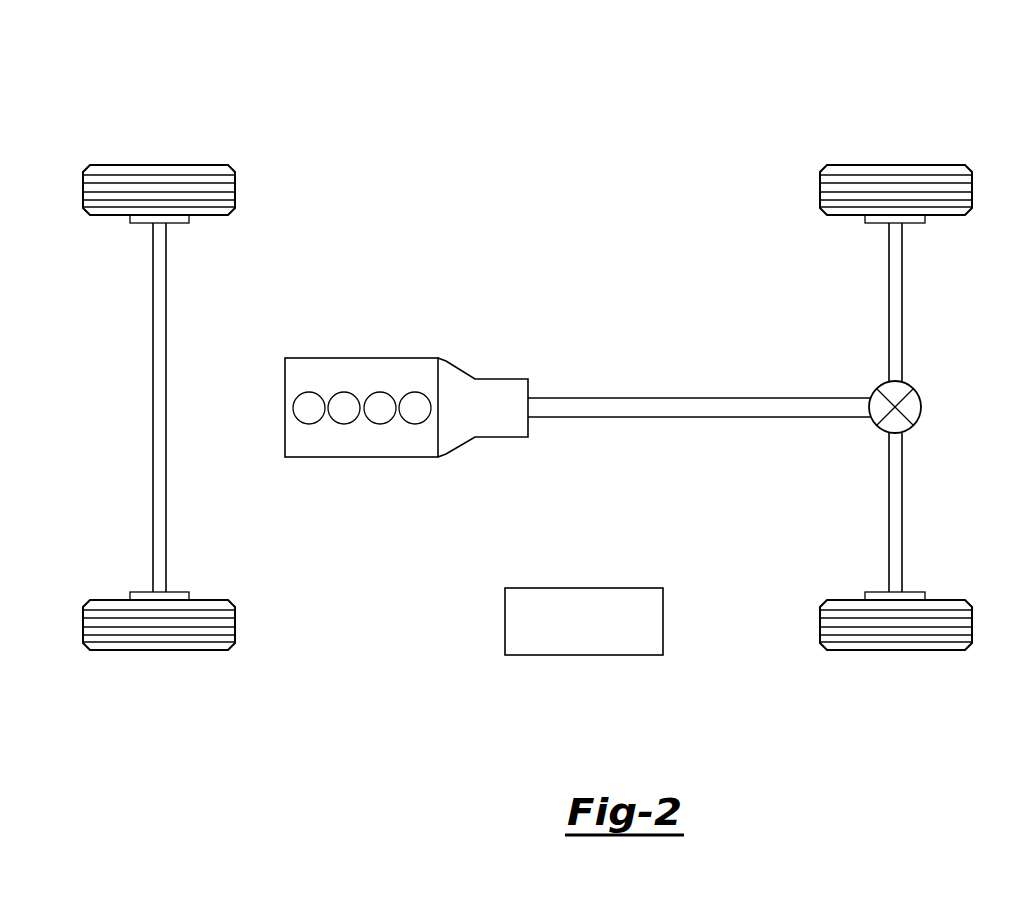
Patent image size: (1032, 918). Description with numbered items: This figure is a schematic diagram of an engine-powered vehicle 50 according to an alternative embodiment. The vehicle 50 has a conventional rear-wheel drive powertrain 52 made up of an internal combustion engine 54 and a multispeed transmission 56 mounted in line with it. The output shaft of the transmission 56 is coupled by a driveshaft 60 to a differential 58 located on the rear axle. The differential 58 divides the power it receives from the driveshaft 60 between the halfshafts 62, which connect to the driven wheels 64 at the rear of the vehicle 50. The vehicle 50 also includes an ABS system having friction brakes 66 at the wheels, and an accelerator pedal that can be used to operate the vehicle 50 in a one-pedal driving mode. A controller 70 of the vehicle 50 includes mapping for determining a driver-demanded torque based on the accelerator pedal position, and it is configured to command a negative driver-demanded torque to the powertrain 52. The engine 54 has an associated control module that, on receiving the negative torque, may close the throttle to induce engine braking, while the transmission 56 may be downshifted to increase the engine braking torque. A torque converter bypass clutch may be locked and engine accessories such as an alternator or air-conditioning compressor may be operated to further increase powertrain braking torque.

The vehicle 50 is at (935, 55).
The rear-wheel drive powertrain 52 is at (568, 320).
The internal combustion engine 54 is at (362, 370).
The multispeed transmission 56 is at (488, 392).
The differential 58 is at (921, 407).
The driveshaft 60 is at (701, 398).
The halfshafts 62 is at (903, 513).
The driven wheels 64 is at (895, 650).
The friction brakes 66 is at (873, 223).
The controller 70 is at (585, 655).